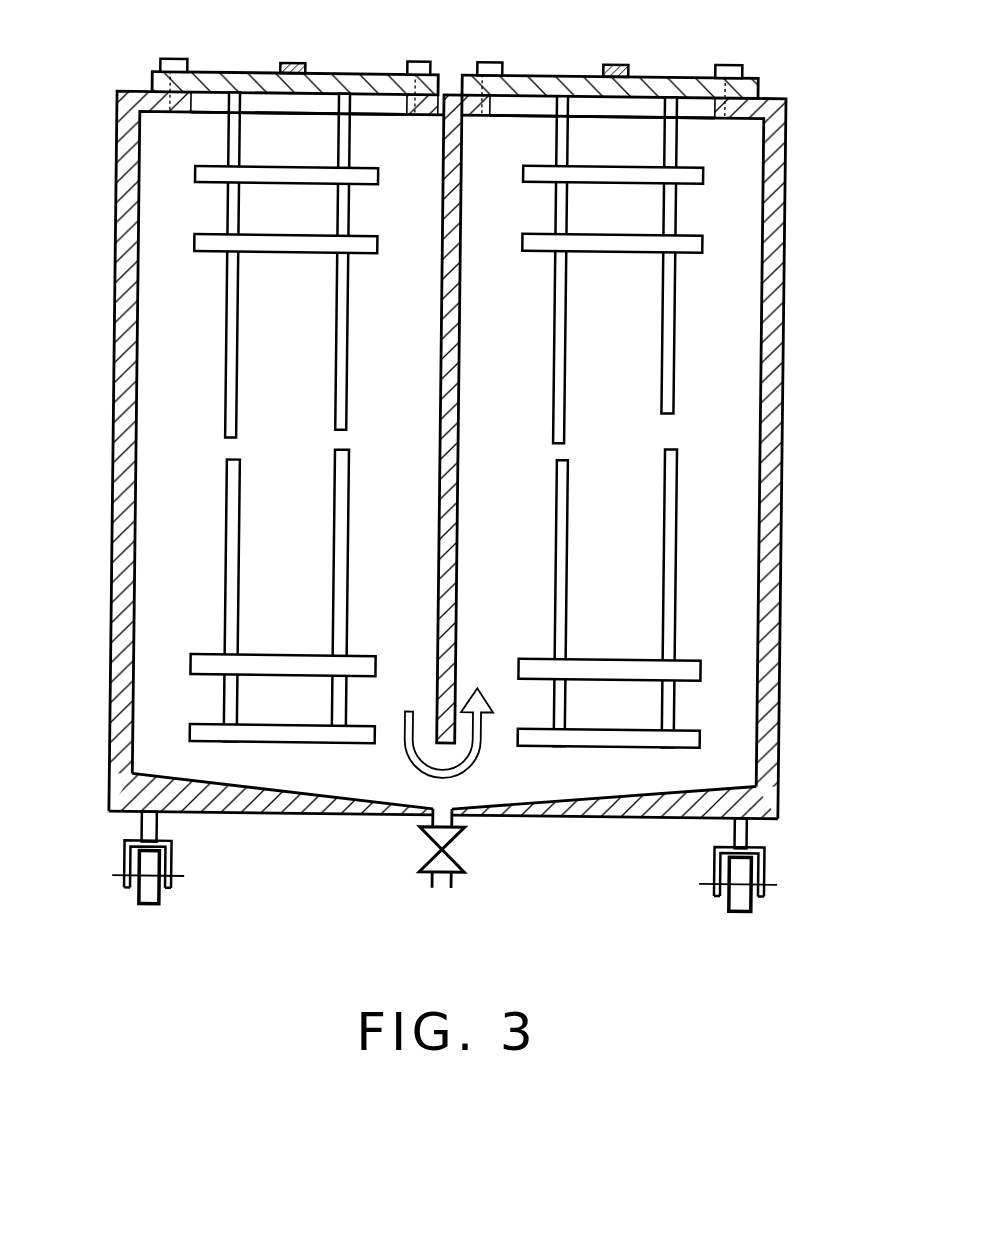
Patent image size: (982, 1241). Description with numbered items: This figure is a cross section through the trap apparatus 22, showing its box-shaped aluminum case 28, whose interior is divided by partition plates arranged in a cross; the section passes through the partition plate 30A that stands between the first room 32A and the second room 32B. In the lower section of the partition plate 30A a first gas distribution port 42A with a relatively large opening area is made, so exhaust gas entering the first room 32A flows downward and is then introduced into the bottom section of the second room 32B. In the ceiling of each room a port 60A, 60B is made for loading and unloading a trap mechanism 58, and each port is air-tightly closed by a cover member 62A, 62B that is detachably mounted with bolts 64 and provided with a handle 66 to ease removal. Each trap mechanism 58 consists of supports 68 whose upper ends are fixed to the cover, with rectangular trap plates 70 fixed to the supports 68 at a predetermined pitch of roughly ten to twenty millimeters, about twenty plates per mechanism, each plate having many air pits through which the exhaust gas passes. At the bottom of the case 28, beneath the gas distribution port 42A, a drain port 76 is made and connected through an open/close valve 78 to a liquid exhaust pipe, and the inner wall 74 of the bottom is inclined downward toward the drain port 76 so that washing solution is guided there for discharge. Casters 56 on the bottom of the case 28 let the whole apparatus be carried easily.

The trap apparatus 22 is at (453, 496).
The case 28 is at (782, 517).
The partition plate 30A is at (466, 385).
The first room 32A is at (152, 535).
The second room 32B is at (484, 534).
The first gas distribution port 42A is at (426, 785).
The casters 56 is at (719, 876).
The trap mechanism 58 is at (205, 277).
The port 60A is at (188, 124).
The port 60B is at (700, 134).
The cover member 62A is at (352, 77).
The cover member 62B is at (674, 75).
The bolts 64 is at (726, 62).
The handle 66 is at (615, 63).
The support 68 is at (677, 613).
The trap plates 70 is at (703, 735).
The inner wall 74 is at (283, 790).
The drain port 76 is at (449, 811).
The open/close valve 78 is at (438, 872).